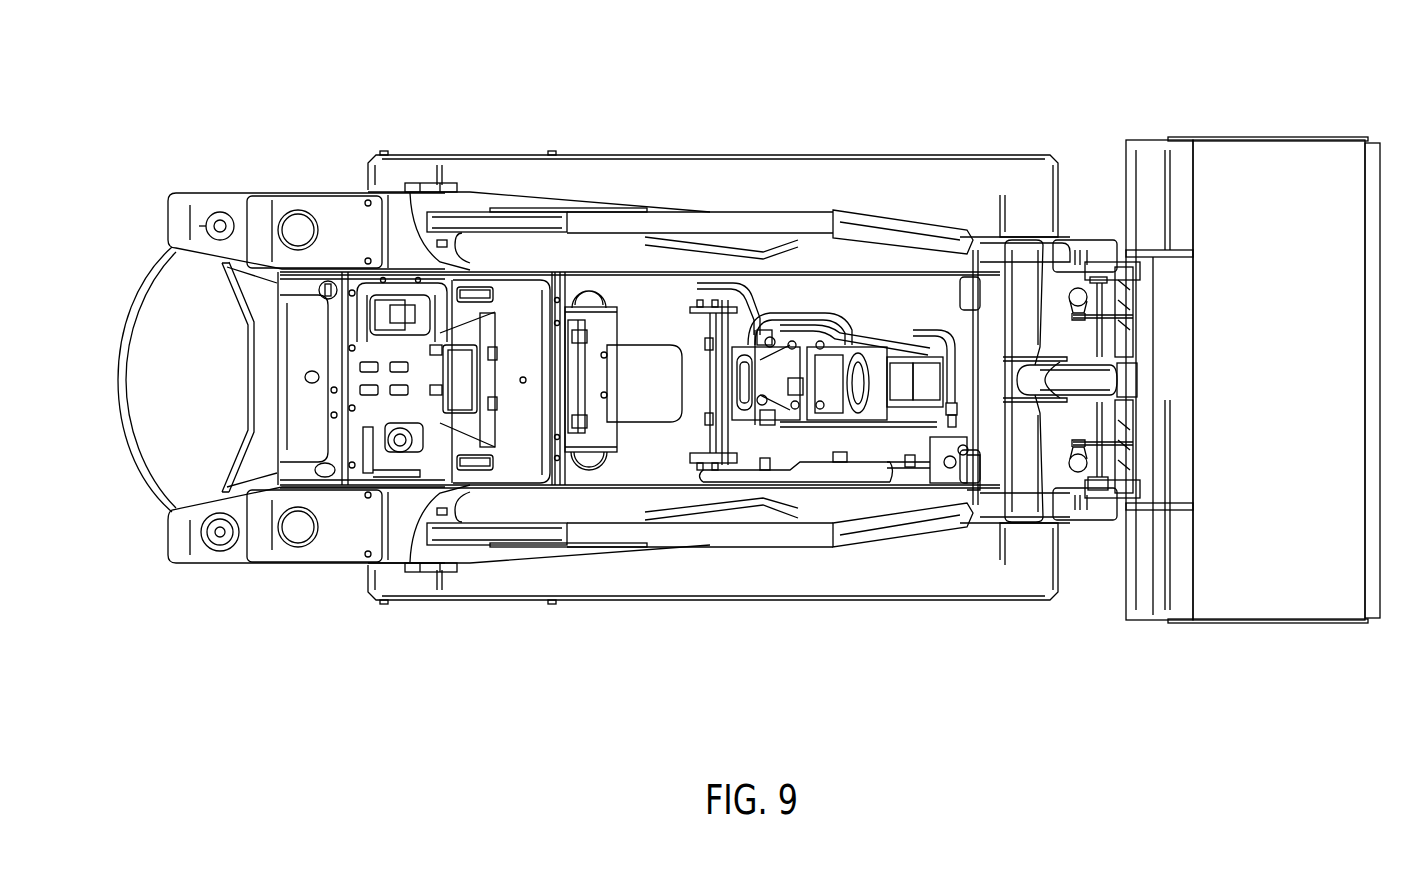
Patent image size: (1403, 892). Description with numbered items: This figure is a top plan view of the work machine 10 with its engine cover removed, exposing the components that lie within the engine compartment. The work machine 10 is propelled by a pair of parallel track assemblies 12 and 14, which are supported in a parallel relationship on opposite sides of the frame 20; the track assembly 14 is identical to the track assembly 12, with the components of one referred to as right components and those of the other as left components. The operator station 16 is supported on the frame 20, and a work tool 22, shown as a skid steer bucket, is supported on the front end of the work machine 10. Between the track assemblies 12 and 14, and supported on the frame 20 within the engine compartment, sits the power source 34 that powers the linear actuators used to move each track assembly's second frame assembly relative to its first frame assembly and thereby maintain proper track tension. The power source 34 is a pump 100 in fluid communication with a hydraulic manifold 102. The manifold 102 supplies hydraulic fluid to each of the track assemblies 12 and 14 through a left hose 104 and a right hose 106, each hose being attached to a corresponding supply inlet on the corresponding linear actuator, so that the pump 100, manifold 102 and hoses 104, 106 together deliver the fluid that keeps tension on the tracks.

The work machine 10 is at (317, 657).
The track assembly 12 is at (685, 610).
The track assembly 14 is at (525, 147).
The operator station 16 is at (355, 425).
The frame 20 is at (640, 460).
The work tool 22 is at (1275, 165).
The power source 34 is at (903, 327).
The pump 100 is at (803, 330).
The hydraulic manifold 102 is at (955, 495).
The left hose 104 is at (752, 330).
The right hose 106 is at (790, 470).